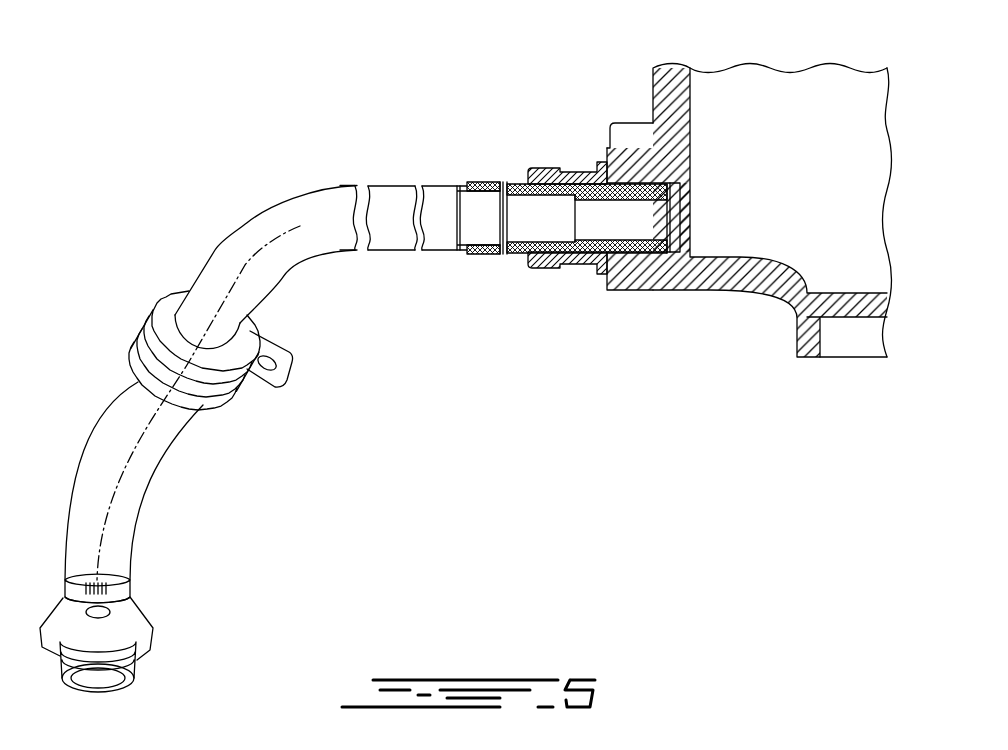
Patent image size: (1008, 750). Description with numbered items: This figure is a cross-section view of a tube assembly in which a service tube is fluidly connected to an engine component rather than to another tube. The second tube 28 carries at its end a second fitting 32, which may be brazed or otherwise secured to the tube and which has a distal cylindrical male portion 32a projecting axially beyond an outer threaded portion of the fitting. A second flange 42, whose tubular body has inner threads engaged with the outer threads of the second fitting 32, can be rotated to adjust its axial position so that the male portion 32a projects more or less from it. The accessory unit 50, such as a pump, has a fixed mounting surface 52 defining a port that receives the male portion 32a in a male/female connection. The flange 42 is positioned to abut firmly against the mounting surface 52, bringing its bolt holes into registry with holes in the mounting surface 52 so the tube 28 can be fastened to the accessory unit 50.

The second tube 28 is at (140, 484).
The second fitting 32 is at (503, 252).
The male portion 32a is at (640, 190).
The second flange 42 is at (597, 165).
The accessory unit 50 is at (777, 113).
The mounting surface 52 is at (604, 292).